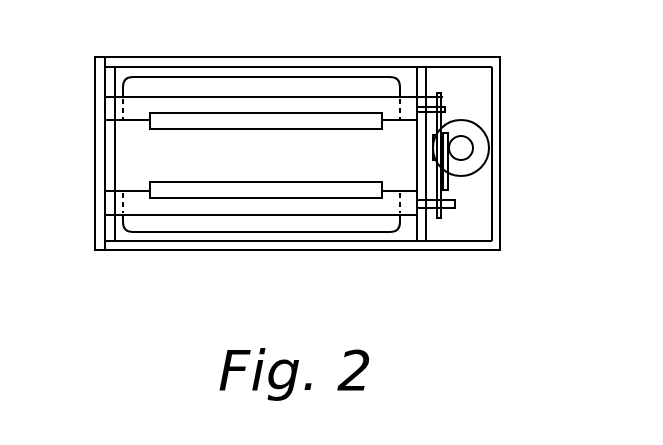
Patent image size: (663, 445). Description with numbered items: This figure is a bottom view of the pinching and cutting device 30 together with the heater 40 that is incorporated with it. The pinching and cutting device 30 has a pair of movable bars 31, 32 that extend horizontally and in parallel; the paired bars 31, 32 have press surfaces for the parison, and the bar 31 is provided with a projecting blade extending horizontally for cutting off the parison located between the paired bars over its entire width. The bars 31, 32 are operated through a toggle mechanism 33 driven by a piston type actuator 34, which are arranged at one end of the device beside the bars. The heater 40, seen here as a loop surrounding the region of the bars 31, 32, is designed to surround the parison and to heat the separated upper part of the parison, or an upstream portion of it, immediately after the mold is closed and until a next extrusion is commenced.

The pinching and cutting device 30 is at (500, 102).
The movable bar 31 is at (205, 118).
The movable bar 32 is at (205, 193).
The toggle mechanism 33 is at (445, 115).
The piston type actuator 34 is at (473, 158).
The heater 40 is at (348, 77).